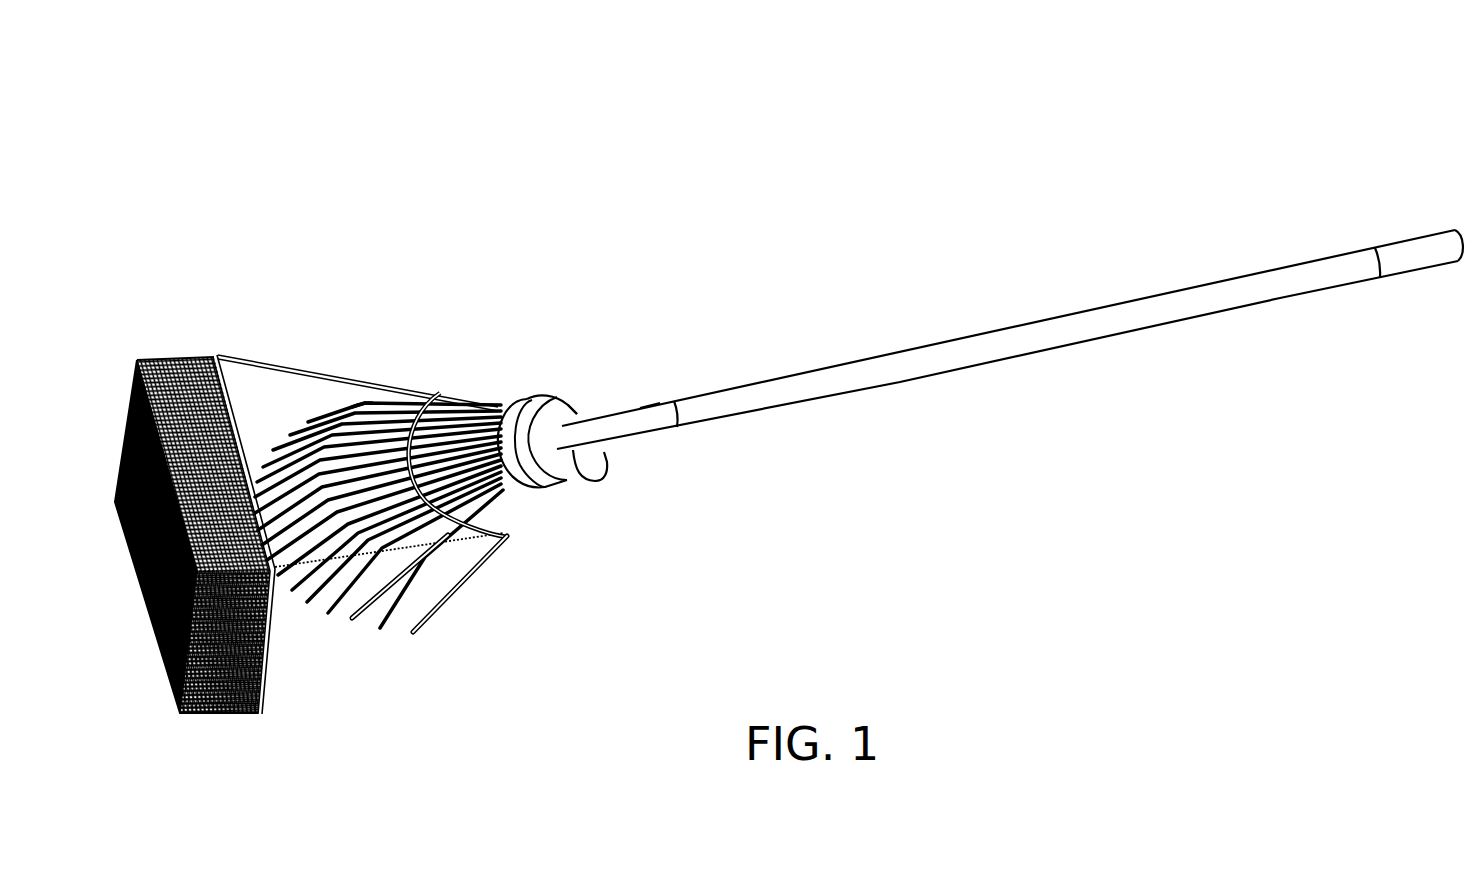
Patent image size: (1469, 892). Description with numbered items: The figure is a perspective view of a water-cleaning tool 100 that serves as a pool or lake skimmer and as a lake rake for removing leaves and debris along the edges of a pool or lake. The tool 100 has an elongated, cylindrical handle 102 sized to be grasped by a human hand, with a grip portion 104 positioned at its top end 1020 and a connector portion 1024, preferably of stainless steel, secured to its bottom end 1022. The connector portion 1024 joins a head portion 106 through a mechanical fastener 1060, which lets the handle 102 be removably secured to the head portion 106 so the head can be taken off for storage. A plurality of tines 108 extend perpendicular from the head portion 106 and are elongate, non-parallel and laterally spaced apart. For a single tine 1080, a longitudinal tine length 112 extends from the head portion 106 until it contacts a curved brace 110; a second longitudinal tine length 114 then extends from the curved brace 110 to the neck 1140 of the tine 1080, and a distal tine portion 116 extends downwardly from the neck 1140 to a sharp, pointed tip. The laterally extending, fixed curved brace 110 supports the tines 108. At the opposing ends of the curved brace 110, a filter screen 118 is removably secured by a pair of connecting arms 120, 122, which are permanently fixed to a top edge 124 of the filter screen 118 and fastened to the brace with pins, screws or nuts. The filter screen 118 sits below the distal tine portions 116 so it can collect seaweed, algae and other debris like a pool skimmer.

The water-cleaning tool 100 is at (1010, 338).
The elongated handle 102 is at (962, 350).
The top end 1020 is at (1460, 230).
The bottom end 1022 is at (680, 412).
The connector portion 1024 is at (648, 408).
The grip portion 104 is at (1400, 253).
The head portion 106 is at (612, 465).
The mechanical fastener 1060 is at (582, 407).
The plurality of tines 108 is at (512, 375).
The tine 1080 is at (510, 400).
The curved brace 110 is at (507, 545).
The longitudinal tine length 112 is at (463, 405).
The second longitudinal tine length 114 is at (401, 397).
The neck 1140 is at (346, 395).
The distal tine portion 116 is at (316, 423).
The filter screen 118 is at (233, 683).
The connecting arm 120 is at (238, 357).
The connecting arm 122 is at (437, 547).
The top edge 124 is at (218, 357).